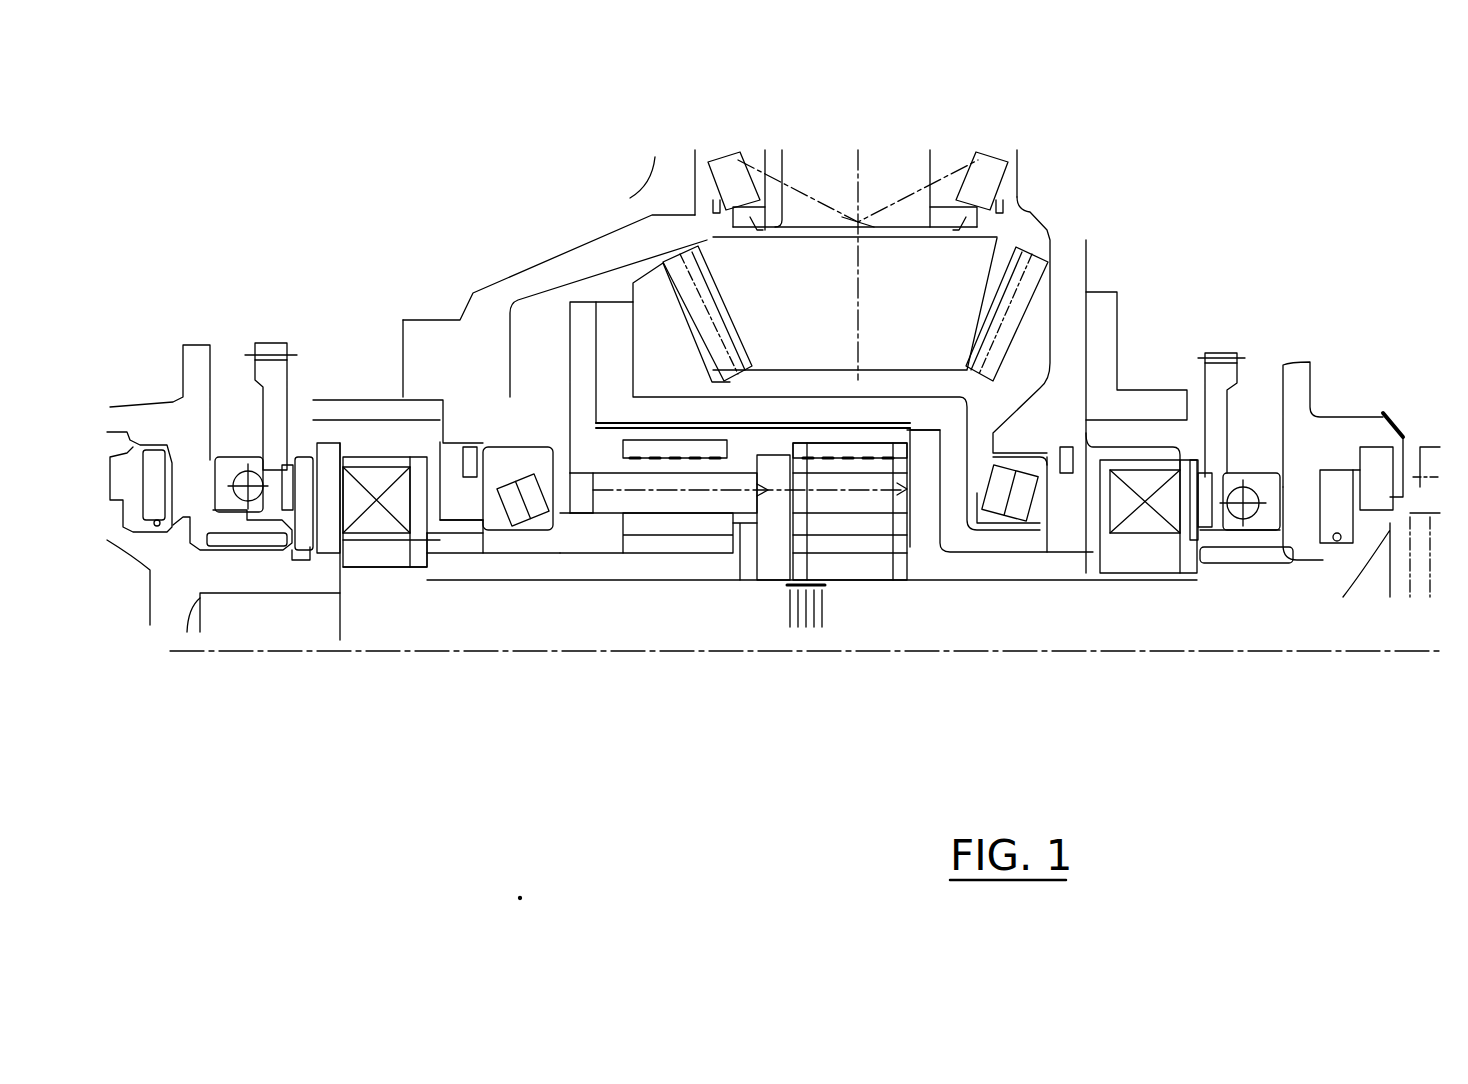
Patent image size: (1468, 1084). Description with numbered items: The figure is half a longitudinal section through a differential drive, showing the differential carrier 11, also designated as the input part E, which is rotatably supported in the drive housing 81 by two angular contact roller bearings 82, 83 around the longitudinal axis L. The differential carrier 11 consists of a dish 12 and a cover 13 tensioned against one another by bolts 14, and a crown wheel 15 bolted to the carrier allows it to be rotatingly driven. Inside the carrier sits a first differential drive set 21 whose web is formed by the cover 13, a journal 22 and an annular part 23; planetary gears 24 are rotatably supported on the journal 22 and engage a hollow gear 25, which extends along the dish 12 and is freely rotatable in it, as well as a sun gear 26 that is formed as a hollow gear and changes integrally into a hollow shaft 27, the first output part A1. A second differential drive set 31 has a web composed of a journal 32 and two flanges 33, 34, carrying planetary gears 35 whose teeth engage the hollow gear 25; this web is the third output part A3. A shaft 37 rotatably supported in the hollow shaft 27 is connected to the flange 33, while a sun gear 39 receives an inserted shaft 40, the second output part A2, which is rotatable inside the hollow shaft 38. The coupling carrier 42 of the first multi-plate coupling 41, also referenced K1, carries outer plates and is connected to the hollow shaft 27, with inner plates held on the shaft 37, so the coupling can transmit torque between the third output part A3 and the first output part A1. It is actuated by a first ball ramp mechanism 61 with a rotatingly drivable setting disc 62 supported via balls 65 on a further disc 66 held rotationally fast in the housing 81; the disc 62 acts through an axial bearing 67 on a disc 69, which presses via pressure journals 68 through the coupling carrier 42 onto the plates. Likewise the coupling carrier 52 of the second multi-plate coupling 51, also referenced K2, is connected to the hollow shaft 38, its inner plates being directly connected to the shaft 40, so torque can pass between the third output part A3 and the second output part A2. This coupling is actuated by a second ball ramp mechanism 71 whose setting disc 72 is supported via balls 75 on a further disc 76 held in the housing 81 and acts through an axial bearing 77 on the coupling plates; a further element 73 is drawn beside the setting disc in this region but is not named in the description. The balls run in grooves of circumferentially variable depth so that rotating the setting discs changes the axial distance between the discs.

The differential carrier 11 is at (981, 411).
The dish 12 is at (1023, 590).
The cover 13 is at (582, 540).
The bolts 14 is at (577, 317).
The crown wheel 15 is at (648, 283).
The first differential drive set 21 is at (677, 600).
The journal 22 is at (613, 503).
The annular part 23 is at (742, 523).
The planetary gears 24 is at (648, 523).
The hollow gear 25 is at (770, 430).
The sun gear 26 is at (503, 623).
The hollow shaft 27 is at (487, 590).
The second differential drive set 31 is at (887, 620).
The journal 32 is at (807, 590).
The flange 33 is at (773, 553).
The flange 34 is at (923, 600).
The planetary gears 35 is at (842, 590).
The shaft 37 is at (433, 627).
The hollow shaft 38 is at (957, 590).
The sun gear 39 is at (865, 590).
The shaft 40 is at (1063, 607).
The first multi-plate coupling 41 is at (383, 360).
The coupling carrier 42 is at (370, 447).
The second multi-plate coupling 51 is at (1167, 410).
The coupling carrier 52 is at (1137, 447).
The first ball ramp mechanism 61 is at (230, 318).
The setting disc 62 is at (278, 343).
The balls 65 is at (250, 482).
The further disc 66 is at (232, 478).
The axial bearing 67 is at (297, 470).
The pressure journals 68 is at (330, 462).
The disc 69 is at (313, 478).
The second ball ramp mechanism 71 is at (1260, 343).
The setting disc 72 is at (1217, 380).
The seal ring 73 is at (1203, 483).
The balls 75 is at (1243, 490).
The further disc 76 is at (1260, 480).
The axial bearing 77 is at (1213, 487).
The drive housing 81 is at (483, 333).
The angular contact roller bearing 82 is at (493, 475).
The angular contact roller bearing 83 is at (1027, 467).
The first output part A1 is at (530, 590).
The second output part A2 is at (992, 590).
The third output part A3 is at (925, 457).
The input part E is at (597, 277).
The first multi-plate coupling K1 is at (370, 610).
The second multi-plate coupling K2 is at (1143, 600).
The longitudinal axis L is at (1352, 655).